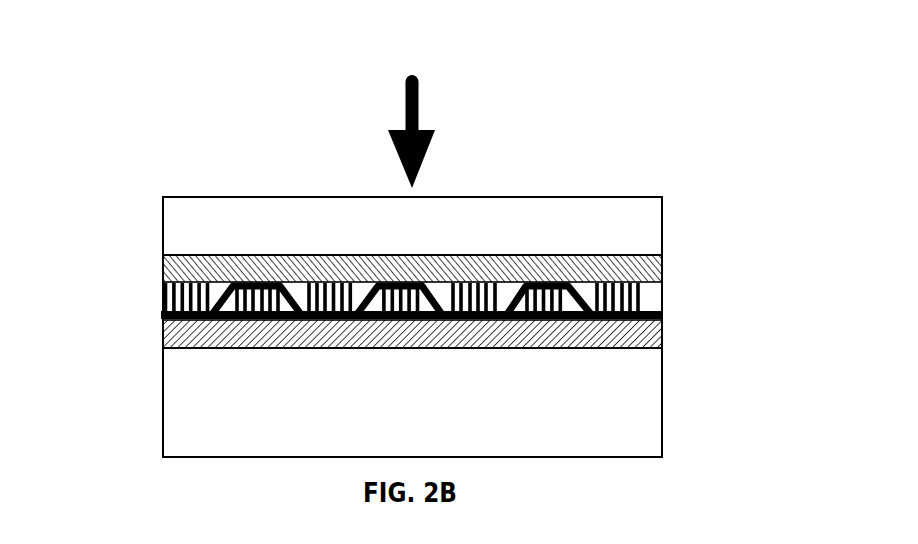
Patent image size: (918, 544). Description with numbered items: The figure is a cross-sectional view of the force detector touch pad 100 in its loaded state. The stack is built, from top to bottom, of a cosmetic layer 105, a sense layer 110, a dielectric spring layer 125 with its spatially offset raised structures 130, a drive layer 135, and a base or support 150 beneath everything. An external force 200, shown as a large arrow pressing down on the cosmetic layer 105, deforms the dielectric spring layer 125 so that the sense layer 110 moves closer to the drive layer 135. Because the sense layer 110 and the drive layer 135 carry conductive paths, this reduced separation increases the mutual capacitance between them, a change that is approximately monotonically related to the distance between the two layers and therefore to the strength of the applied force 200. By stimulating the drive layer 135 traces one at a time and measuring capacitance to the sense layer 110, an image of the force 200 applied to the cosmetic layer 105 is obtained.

The force detector touch pad 100 is at (126, 178).
The cosmetic layer 105 is at (433, 239).
The sense layer 110 is at (662, 265).
The dielectric spring layer 125 is at (662, 318).
The spatially offset raised structures 130 is at (163, 297).
The drive layer 135 is at (163, 338).
The base or support 150 is at (431, 414).
The external force 200 is at (411, 119).